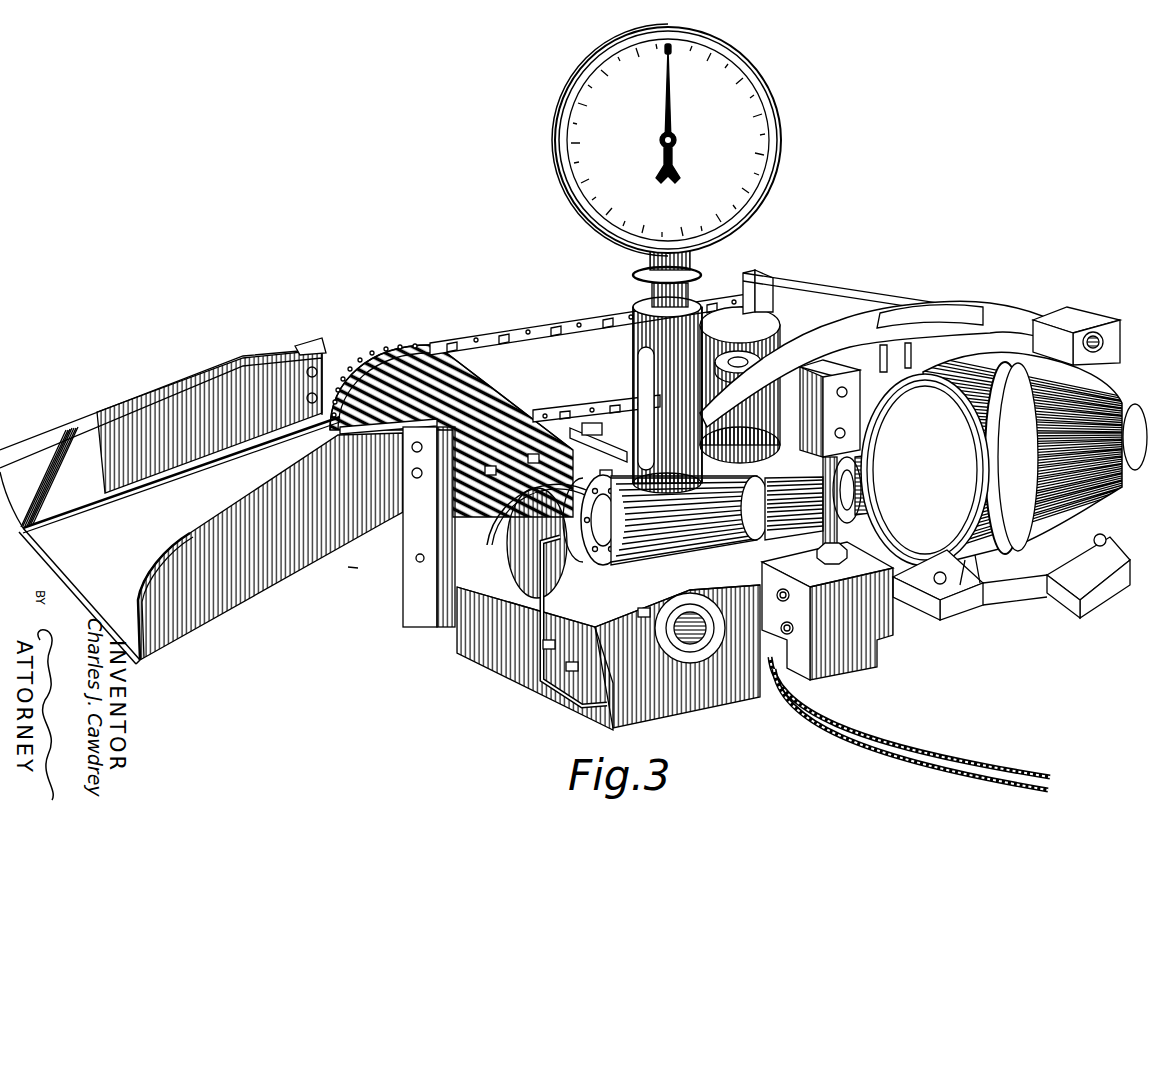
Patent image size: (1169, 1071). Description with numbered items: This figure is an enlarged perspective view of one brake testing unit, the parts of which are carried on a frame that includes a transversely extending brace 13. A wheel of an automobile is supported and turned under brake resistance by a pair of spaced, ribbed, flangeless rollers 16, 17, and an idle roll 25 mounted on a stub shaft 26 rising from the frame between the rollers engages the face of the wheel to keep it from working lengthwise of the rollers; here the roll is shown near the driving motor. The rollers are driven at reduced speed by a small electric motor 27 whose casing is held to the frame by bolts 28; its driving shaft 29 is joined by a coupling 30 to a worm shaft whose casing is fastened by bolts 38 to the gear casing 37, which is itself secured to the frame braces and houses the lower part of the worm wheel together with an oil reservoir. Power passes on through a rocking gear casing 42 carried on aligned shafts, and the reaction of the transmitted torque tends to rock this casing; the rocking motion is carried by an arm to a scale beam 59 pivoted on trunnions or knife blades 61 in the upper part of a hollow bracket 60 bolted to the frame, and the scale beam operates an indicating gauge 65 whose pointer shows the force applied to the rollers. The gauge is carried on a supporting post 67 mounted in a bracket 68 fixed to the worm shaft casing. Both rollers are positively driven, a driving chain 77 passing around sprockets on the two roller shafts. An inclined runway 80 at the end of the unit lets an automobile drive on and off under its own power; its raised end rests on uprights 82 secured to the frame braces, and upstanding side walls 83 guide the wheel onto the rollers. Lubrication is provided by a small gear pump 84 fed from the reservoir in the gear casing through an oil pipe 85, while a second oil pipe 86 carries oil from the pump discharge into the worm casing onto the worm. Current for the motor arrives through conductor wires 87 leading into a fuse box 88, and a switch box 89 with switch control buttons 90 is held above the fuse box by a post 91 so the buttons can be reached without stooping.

The transversely extending brace 13 is at (490, 640).
The roller 16 is at (430, 360).
The roller 17 is at (780, 333).
The idle roll 25 is at (757, 357).
The stub shaft 26 is at (727, 473).
The electric motor 27 is at (1112, 505).
The bolts 28 is at (943, 580).
The driving shaft 29 is at (833, 500).
The coupling 30 is at (900, 450).
The gear casing 37 is at (733, 690).
The bolts 38 is at (643, 613).
The rocking gear casing 42 is at (455, 590).
The scale beam 59 is at (955, 305).
The hollow bracket 60 is at (1070, 315).
The trunnions or knife blades 61 is at (1094, 332).
The indicating gauge 65 is at (556, 125).
The supporting post 67 is at (697, 275).
The bracket 68 is at (632, 318).
The driving chain 77 is at (522, 330).
The inclined runway 80 is at (92, 587).
The uprights 82 is at (300, 347).
The upstanding side walls 83 is at (117, 417).
The gear pump 84 is at (582, 520).
The oil pipe 85 is at (543, 657).
The oil pipe 86 is at (660, 556).
The conductor wires 87 is at (920, 762).
The fuse box 88 is at (880, 628).
The switch box 89 is at (850, 395).
The switch control buttons 90 is at (908, 372).
The post 91 is at (842, 527).